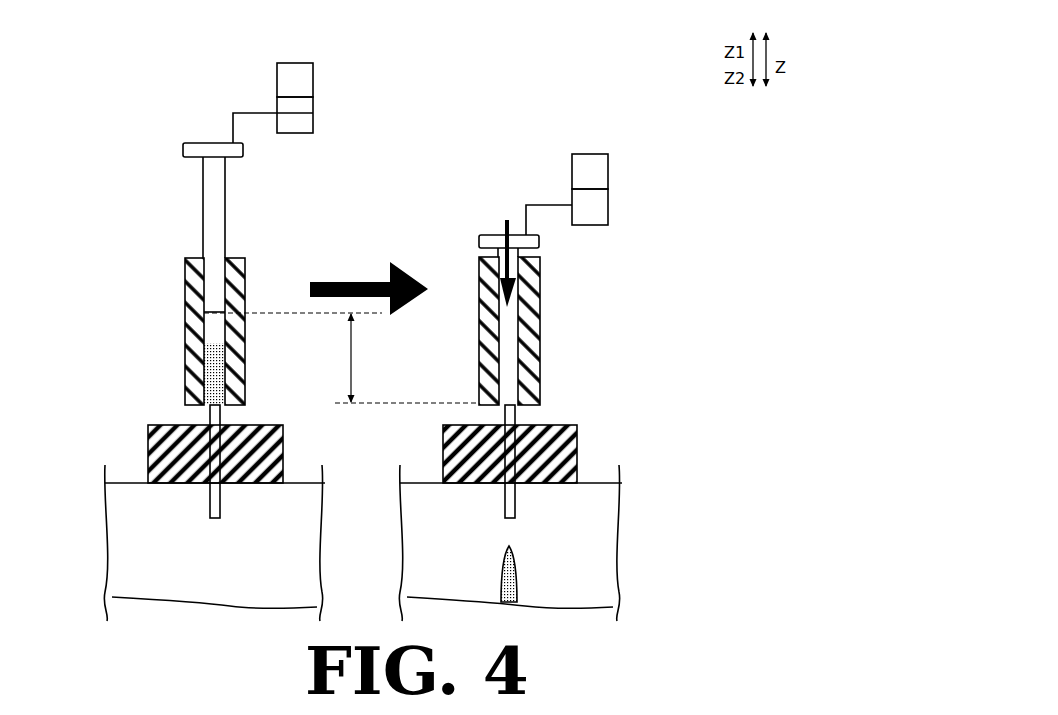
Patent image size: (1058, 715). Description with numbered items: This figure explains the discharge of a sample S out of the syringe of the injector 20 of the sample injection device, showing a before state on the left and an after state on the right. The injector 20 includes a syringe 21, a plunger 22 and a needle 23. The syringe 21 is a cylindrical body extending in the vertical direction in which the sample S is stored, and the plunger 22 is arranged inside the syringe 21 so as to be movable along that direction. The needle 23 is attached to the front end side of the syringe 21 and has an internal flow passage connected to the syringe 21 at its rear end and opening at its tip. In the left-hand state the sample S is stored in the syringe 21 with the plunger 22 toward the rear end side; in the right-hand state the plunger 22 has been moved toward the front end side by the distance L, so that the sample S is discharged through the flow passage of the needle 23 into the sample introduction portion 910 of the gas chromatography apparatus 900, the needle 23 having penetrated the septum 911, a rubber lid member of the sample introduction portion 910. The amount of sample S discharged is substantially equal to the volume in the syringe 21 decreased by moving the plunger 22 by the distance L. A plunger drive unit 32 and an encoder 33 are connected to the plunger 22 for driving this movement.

The injector 20 is at (396, 290).
The syringe 21 is at (181, 273).
The plunger 22 is at (183, 149).
The needle 23 is at (203, 493).
The plunger drive unit 32 is at (313, 115).
The encoder 33 is at (313, 82).
The gas chromatography apparatus 900 is at (355, 520).
The sample introduction portion 910 is at (302, 489).
The septum 911 is at (262, 425).
The sample S is at (205, 372).
The distance L is at (341, 358).